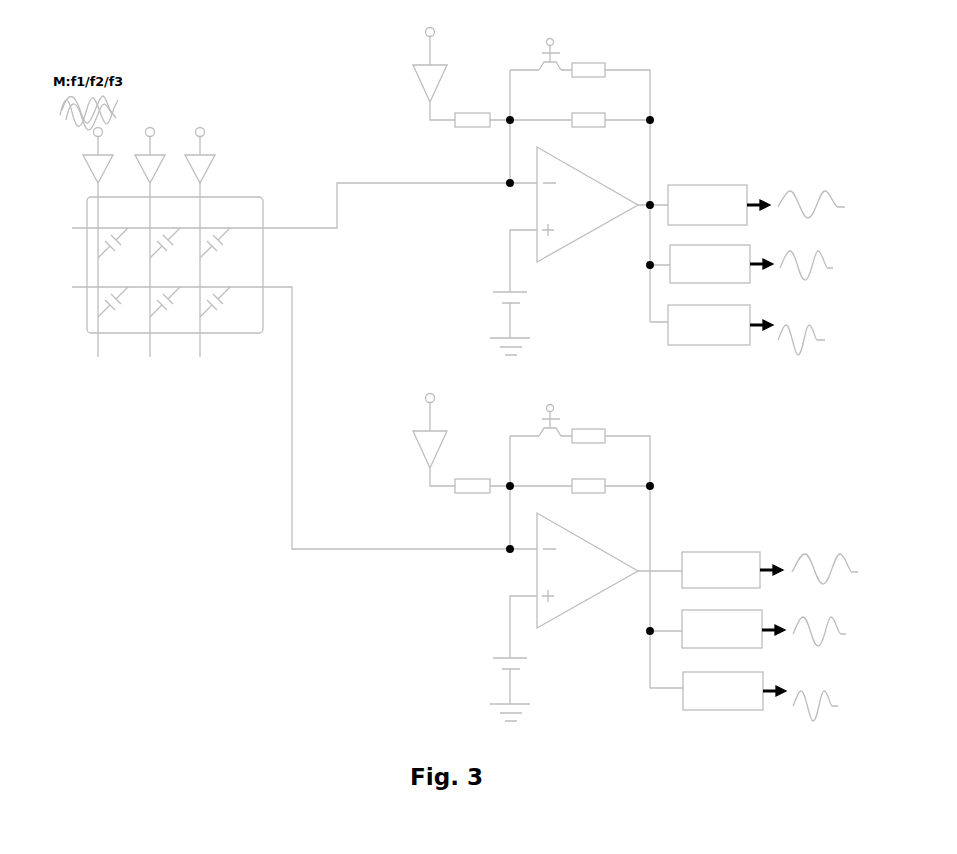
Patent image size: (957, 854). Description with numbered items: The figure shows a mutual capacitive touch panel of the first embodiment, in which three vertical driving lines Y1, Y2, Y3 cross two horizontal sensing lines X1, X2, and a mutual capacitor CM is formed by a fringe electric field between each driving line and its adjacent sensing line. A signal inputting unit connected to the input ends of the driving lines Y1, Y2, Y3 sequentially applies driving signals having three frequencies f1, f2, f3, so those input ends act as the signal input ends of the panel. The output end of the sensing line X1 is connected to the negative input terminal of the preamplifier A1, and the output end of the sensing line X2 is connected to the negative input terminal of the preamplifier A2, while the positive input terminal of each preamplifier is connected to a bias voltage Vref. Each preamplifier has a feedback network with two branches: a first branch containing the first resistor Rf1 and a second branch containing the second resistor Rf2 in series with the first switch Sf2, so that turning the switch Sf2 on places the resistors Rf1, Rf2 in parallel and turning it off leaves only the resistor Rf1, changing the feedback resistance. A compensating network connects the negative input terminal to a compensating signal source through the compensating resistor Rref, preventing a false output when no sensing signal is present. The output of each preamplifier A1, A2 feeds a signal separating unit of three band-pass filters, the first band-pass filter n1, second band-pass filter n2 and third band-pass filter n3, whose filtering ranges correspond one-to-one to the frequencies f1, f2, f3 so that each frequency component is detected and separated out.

The sensing line X1 is at (300, 205).
The sensing line X2 is at (300, 408).
The driving line Y1 is at (98, 255).
The driving line Y2 is at (150, 255).
The driving line Y3 is at (200, 255).
The mutual capacitor CM is at (171, 282).
The compensating resistor Rref is at (472, 291).
The first resistor Rf1 is at (588, 293).
The second resistor Rf2 is at (589, 246).
The first switch Sf2 is at (551, 225).
The preamplifier A1 is at (587, 206).
The preamplifier A2 is at (587, 573).
The bias voltage Vref is at (530, 506).
The first band-pass filter n1 is at (714, 372).
The second band-pass filter n2 is at (716, 436).
The third band-pass filter n3 is at (715, 499).
The frequency f1 is at (818, 376).
The frequency f2 is at (813, 441).
The frequency f3 is at (808, 510).